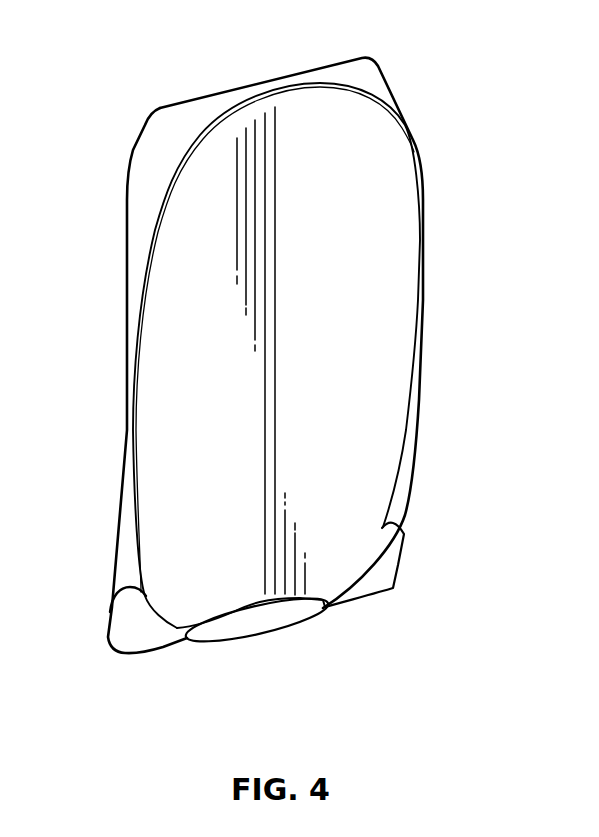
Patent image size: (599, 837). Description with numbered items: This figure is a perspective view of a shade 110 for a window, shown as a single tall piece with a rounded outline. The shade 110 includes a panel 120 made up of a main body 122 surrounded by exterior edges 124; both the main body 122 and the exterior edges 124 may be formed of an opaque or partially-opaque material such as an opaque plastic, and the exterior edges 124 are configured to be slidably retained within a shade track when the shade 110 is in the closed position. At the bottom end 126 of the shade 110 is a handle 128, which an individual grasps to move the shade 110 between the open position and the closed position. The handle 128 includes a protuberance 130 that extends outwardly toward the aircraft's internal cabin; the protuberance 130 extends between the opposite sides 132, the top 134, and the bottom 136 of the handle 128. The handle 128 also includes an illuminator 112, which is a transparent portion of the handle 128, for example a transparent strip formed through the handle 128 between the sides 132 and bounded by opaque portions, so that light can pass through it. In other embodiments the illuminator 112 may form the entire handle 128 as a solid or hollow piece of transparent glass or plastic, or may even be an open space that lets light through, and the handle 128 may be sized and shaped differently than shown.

The shade 110 is at (442, 158).
The illuminator 112 is at (230, 645).
The panel 120 is at (328, 262).
The main body 122 is at (313, 338).
The exterior edges 124 is at (268, 84).
The bottom end 126 is at (400, 567).
The handle 128 is at (213, 646).
The protuberance 130 is at (278, 626).
The sides 132 is at (188, 648).
The top 134 is at (254, 598).
The bottom 136 is at (260, 643).